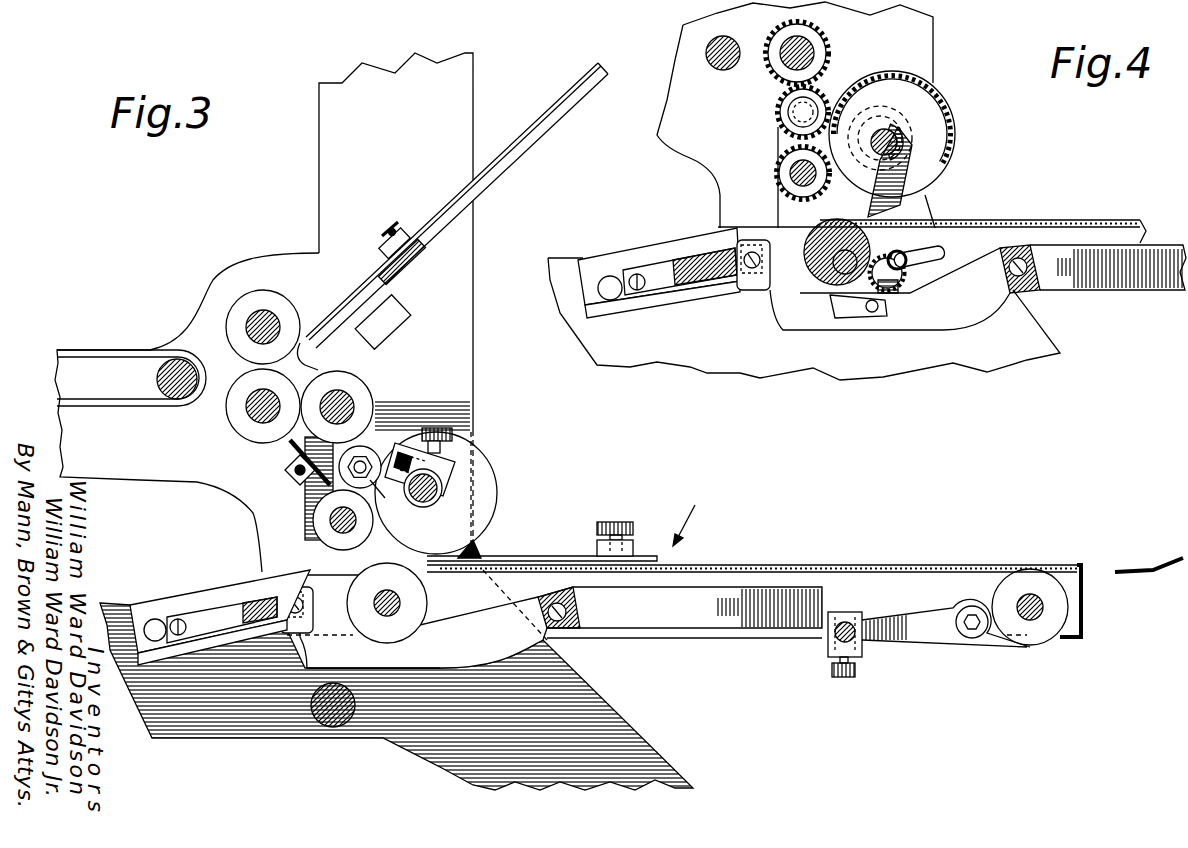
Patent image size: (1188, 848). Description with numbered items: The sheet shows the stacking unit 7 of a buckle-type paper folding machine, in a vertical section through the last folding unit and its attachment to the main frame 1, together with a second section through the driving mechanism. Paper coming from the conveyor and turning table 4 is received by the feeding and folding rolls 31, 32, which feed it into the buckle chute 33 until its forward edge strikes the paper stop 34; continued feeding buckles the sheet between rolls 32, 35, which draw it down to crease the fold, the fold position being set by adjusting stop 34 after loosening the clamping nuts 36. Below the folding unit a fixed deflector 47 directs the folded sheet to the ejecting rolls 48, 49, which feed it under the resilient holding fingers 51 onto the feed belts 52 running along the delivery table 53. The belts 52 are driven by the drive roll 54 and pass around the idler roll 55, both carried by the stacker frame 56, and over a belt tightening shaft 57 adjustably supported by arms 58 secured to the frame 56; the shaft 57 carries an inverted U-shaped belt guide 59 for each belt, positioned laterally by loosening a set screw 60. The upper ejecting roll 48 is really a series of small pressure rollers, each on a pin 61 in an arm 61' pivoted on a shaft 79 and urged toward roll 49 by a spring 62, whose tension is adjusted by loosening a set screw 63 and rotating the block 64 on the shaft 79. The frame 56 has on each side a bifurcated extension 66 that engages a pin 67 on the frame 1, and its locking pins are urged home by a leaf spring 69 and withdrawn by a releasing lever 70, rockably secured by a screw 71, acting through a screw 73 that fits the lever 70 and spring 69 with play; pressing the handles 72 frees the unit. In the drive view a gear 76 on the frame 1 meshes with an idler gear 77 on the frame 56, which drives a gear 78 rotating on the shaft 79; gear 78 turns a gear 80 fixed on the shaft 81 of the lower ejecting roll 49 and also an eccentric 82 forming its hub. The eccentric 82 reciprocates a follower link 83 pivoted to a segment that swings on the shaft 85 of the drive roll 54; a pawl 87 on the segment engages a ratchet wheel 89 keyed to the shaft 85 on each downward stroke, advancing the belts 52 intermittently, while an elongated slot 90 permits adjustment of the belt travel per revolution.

In FIG. 3, the main frame 1 is at (330, 191).
In FIG. 4, the main frame 1 is at (925, 29).
In FIG. 3, the conveyor and turning table 4 is at (65, 349).
In FIG. 3, the stacking unit 7 is at (690, 513).
In FIG. 3, the feeding and folding roll 31 is at (240, 297).
In FIG. 3, the feeding and folding roll 32 is at (237, 416).
In FIG. 3, the buckle chute 33 is at (347, 333).
In FIG. 3, the paper stop 34 is at (385, 288).
In FIG. 3, the folding roll 35 is at (365, 400).
In FIG. 3, the clamping nuts 36 is at (398, 235).
In FIG. 3, the deflector 47 is at (292, 449).
In FIG. 3, the upper ejecting roll 48 is at (318, 494).
In FIG. 3, the lower ejecting roll 49 is at (318, 521).
In FIG. 3, the resilient holding fingers 51 is at (547, 557).
In FIG. 3, the feed belts 52 is at (942, 562).
In FIG. 4, the feed belts 52 is at (1042, 212).
In FIG. 3, the delivery table 53 is at (733, 565).
In FIG. 4, the delivery table 53 is at (1135, 220).
In FIG. 3, the drive roll 54 is at (418, 612).
In FIG. 4, the drive roll 54 is at (800, 230).
In FIG. 3, the idler roll 55 is at (1037, 580).
In FIG. 3, the stacker frame 56 is at (508, 576).
In FIG. 4, the stacker frame 56 is at (703, 236).
In FIG. 3, the belt tightening shaft 57 is at (862, 647).
In FIG. 3, the arms 58 is at (913, 643).
In FIG. 3, the belt guide 59 is at (828, 650).
In FIG. 3, the set screw 60 is at (850, 677).
In FIG. 3, the pin 61 is at (371, 439).
In FIG. 3, the arm 61' is at (408, 506).
In FIG. 3, the spring 62 is at (397, 440).
In FIG. 3, the set screw 63 is at (455, 436).
In FIG. 3, the block 64 is at (457, 470).
In FIG. 4, the block 64 is at (906, 266).
In FIG. 3, the bifurcated extension 66 is at (150, 652).
In FIG. 4, the bifurcated extension 66 is at (603, 312).
In FIG. 3, the pin 67 is at (157, 620).
In FIG. 4, the pin 67 is at (607, 280).
In FIG. 3, the leaf spring 69 is at (214, 610).
In FIG. 4, the leaf spring 69 is at (673, 268).
In FIG. 3, the releasing lever 70 is at (438, 668).
In FIG. 3, the screw 71 is at (568, 613).
In FIG. 4, the screw 71 is at (1035, 291).
In FIG. 3, the handle 72 is at (797, 588).
In FIG. 4, the handle 72 is at (1172, 283).
In FIG. 3, the screw 73 is at (290, 598).
In FIG. 4, the screw 73 is at (747, 275).
In FIG. 4, the gear 76 is at (773, 80).
In FIG. 4, the idler gear 77 is at (778, 117).
In FIG. 4, the gear 78 is at (920, 105).
In FIG. 3, the shaft 79 is at (445, 490).
In FIG. 4, the shaft 79 is at (912, 143).
In FIG. 4, the gear 80 is at (782, 172).
In FIG. 3, the shaft 81 is at (338, 525).
In FIG. 4, the shaft 81 is at (800, 176).
In FIG. 4, the eccentric 82 is at (913, 170).
In FIG. 4, the follower link 83 is at (900, 203).
In FIG. 3, the shaft 85 is at (403, 601).
In FIG. 4, the shaft 85 is at (905, 295).
In FIG. 4, the pawl 87 is at (847, 318).
In FIG. 4, the ratchet wheel 89 is at (893, 306).
In FIG. 4, the elongated slot 90 is at (945, 251).